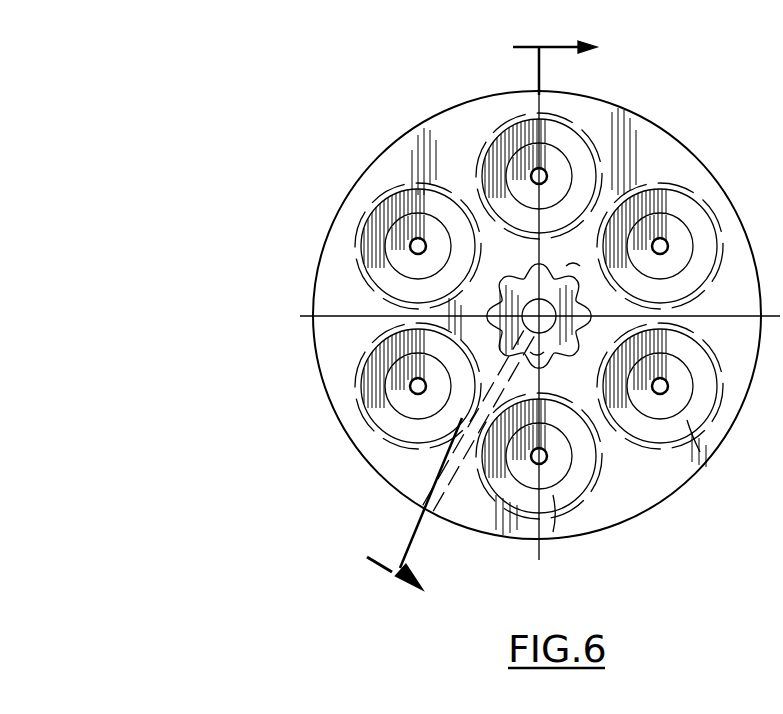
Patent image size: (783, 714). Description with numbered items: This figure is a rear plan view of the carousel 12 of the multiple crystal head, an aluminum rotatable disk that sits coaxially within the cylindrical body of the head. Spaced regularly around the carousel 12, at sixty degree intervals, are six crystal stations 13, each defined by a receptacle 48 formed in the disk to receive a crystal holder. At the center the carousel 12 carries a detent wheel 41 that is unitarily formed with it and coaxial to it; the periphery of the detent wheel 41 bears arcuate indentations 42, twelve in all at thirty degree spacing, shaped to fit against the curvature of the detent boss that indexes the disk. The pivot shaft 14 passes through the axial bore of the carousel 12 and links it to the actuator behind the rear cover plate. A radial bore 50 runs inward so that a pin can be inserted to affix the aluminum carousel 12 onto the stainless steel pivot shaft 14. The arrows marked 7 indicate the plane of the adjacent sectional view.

The carousel 12 is at (633, 508).
The crystal stations 13 is at (497, 143).
The pivot shaft 14 is at (540, 327).
The detent wheel 41 is at (533, 282).
The ratchet teeth 42 is at (549, 272).
The receptacles 48 is at (552, 530).
The radial bore 50 is at (440, 480).
The section line 7- 7 is at (490, 318).